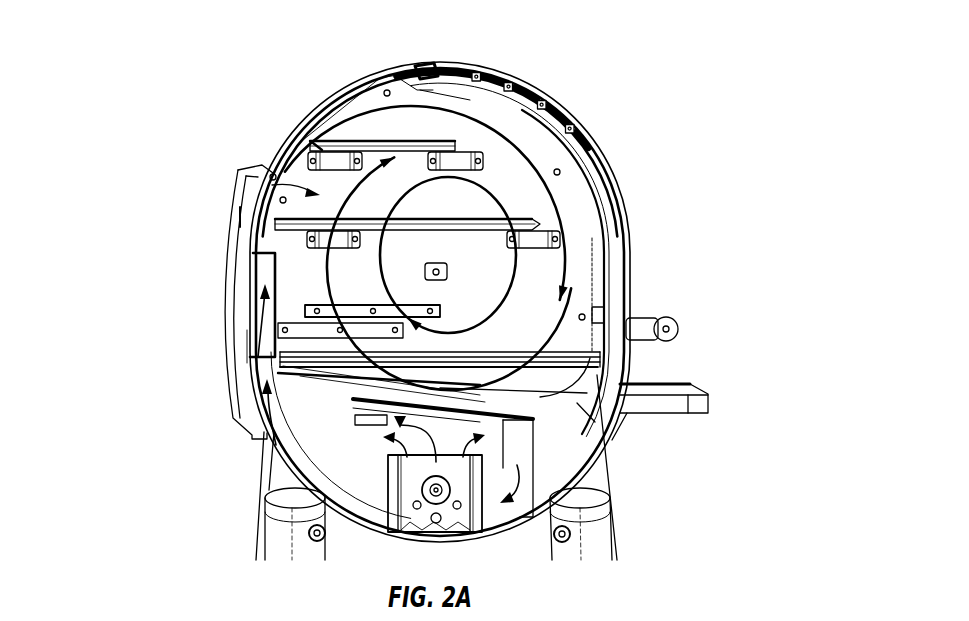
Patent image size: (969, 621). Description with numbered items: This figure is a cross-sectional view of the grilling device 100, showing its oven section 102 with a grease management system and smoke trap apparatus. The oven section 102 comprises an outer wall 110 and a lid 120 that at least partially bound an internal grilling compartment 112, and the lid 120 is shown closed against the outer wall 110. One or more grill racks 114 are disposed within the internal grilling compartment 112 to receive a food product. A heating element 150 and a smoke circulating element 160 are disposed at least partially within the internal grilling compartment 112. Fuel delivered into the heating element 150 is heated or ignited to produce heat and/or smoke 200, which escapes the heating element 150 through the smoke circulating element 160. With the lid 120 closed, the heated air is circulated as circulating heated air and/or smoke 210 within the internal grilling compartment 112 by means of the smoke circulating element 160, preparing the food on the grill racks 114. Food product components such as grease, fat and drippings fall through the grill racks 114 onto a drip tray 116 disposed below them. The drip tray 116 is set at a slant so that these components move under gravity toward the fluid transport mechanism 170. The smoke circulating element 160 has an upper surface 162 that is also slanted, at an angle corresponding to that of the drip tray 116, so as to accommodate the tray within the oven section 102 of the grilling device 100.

The grilling device 100 is at (154, 111).
The oven section 102 is at (289, 92).
The outer wall 110 is at (295, 130).
The internal grilling compartment 112 is at (270, 183).
The grill rack 114 is at (440, 230).
The drip tray 116 is at (614, 356).
The lid 120 is at (626, 200).
The heating element 150 is at (483, 492).
The smoke circulating element 160 is at (610, 446).
The upper surface 162 is at (300, 359).
The fluid transport mechanism 170 is at (505, 449).
The heat and/or smoke 200 is at (330, 481).
The circulating heated air and/or smoke 210 is at (488, 120).